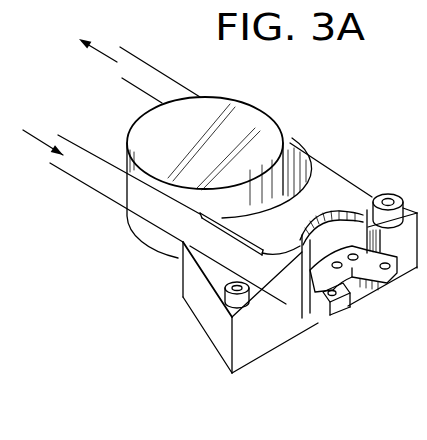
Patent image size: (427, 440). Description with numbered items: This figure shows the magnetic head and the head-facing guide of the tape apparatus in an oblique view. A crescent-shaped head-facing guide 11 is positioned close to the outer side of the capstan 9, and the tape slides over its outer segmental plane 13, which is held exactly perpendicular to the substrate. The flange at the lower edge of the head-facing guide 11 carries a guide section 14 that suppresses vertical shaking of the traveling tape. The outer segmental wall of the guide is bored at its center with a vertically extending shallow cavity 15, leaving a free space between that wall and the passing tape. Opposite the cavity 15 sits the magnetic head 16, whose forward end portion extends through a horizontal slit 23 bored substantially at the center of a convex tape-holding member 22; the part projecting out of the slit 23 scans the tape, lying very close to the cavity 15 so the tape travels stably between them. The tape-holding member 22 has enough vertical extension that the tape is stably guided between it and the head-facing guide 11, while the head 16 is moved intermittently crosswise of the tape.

The capstan 9 is at (244, 111).
The crescent-shaped head-facing guide 11 is at (322, 168).
The outer segmental plane 13 is at (247, 249).
The guide section 14 is at (260, 297).
The vertically extending shallow cavity 15 is at (322, 210).
The magnetic head 16 is at (360, 278).
The convex tape-holding member 22 is at (348, 218).
The horizontal slit 23 is at (380, 240).